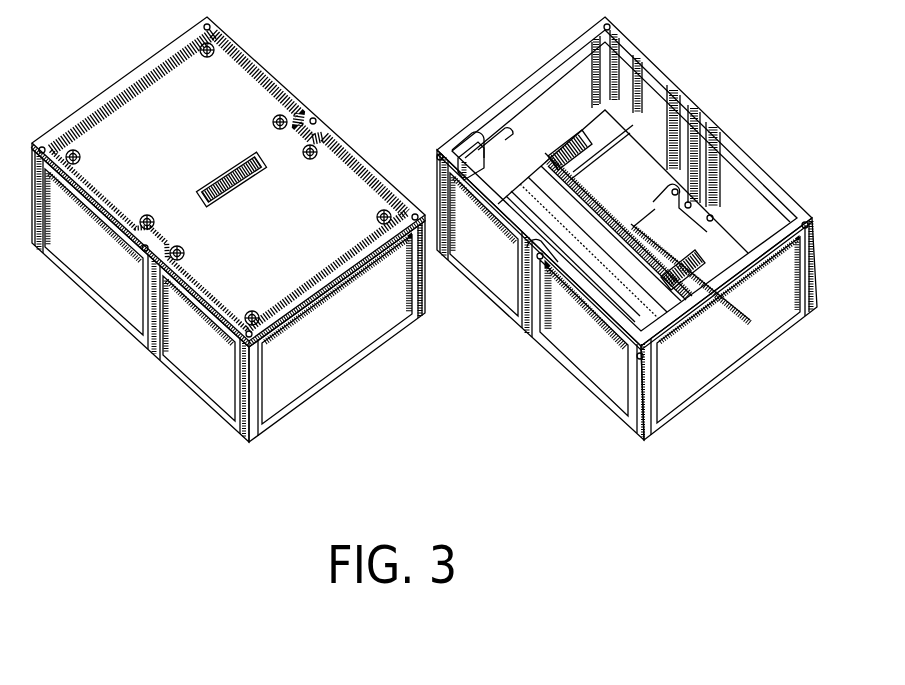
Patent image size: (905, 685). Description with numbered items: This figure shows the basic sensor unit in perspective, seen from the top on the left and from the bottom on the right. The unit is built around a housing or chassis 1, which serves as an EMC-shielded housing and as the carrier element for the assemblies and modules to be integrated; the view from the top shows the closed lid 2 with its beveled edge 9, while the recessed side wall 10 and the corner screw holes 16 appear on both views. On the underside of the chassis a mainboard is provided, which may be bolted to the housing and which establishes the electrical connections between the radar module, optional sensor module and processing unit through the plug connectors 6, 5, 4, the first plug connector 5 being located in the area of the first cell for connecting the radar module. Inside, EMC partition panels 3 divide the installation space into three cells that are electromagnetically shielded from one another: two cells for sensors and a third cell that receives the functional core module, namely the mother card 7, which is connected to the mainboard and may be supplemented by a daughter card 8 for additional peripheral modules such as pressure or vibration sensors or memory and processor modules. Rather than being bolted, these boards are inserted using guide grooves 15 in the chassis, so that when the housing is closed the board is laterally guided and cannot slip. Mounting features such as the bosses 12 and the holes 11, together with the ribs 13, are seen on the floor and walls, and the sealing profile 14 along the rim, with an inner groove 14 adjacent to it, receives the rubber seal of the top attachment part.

The housing or chassis 1 is at (693, 367).
The lid 2 is at (172, 128).
The EMC partition panels 3 is at (640, 147).
The plug connector 4 is at (580, 133).
The first plug connector 5 is at (703, 270).
The plug connector 6 is at (240, 163).
The mother card 7 is at (597, 233).
The daughter card 8 is at (617, 290).
The bevelled edge of lid 9 is at (152, 65).
The side wall recess 10 is at (241, 390).
The hole 11 is at (690, 207).
The mounting boss 12 is at (652, 203).
The rib 13 is at (633, 50).
The sealing profile 14 is at (503, 103).
The guide grooves 15 is at (477, 167).
The screw hole 16 is at (318, 118).